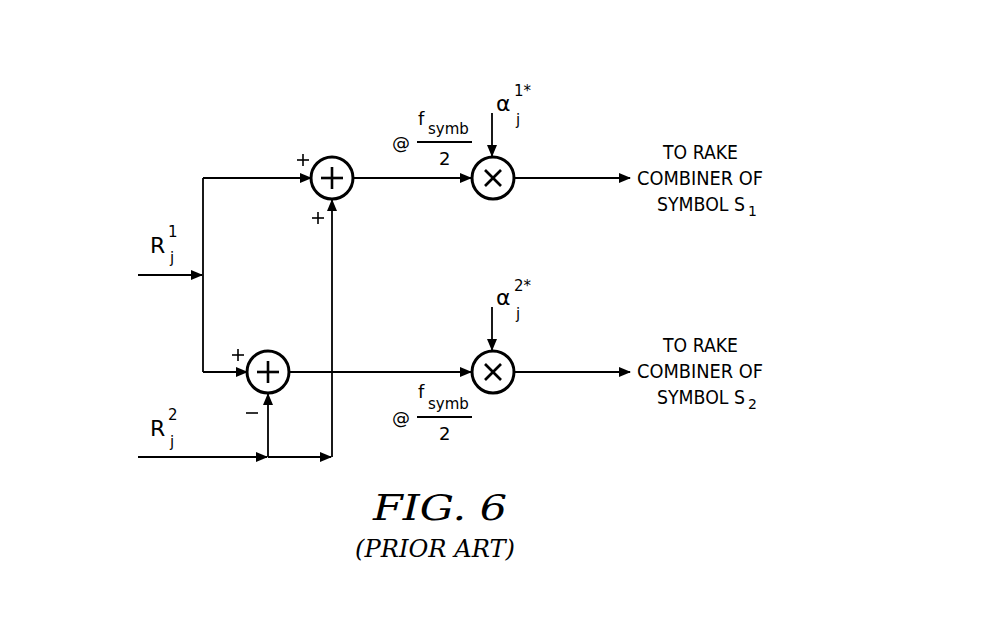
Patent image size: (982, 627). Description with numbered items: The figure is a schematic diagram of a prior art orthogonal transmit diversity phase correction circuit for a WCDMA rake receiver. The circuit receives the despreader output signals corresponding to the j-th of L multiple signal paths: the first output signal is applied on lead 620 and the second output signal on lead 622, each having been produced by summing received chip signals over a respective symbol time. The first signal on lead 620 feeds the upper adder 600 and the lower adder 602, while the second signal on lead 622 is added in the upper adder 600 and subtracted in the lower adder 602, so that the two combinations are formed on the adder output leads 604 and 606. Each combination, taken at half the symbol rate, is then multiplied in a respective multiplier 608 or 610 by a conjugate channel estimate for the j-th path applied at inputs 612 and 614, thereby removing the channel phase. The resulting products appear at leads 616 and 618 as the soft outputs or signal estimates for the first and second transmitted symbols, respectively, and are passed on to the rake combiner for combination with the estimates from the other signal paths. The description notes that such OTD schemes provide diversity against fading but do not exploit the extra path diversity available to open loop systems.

The first adder 600 is at (333, 156).
The second adder 602 is at (268, 350).
The first adder output 604 is at (407, 180).
The second adder output 606 is at (407, 370).
The first multiplier 608 is at (495, 200).
The second multiplier 610 is at (495, 394).
The first conjugate channel estimate input 612 is at (493, 131).
The second conjugate channel estimate input 614 is at (493, 324).
The lead 616 is at (565, 180).
The lead 618 is at (565, 374).
The lead 620 is at (164, 277).
The lead 622 is at (164, 459).